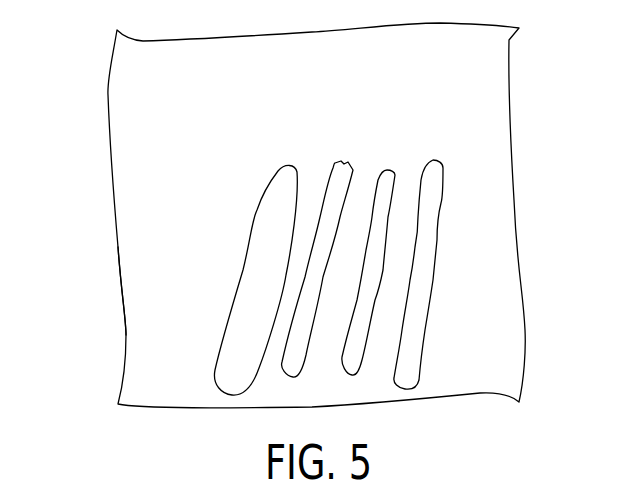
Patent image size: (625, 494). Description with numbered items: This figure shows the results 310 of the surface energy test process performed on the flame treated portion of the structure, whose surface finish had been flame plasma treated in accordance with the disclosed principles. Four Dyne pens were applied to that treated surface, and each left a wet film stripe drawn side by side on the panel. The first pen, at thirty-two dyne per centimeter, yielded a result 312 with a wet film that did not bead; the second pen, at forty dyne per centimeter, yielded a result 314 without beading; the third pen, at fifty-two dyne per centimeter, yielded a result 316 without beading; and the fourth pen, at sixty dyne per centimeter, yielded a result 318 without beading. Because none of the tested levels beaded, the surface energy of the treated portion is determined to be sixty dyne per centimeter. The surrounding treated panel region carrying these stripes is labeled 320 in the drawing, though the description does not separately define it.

The results 310 is at (97, 105).
The result 312 is at (245, 198).
The result 314 is at (312, 160).
The result 316 is at (388, 162).
The result 318 is at (449, 220).
The panel surface/edge 320 is at (137, 280).